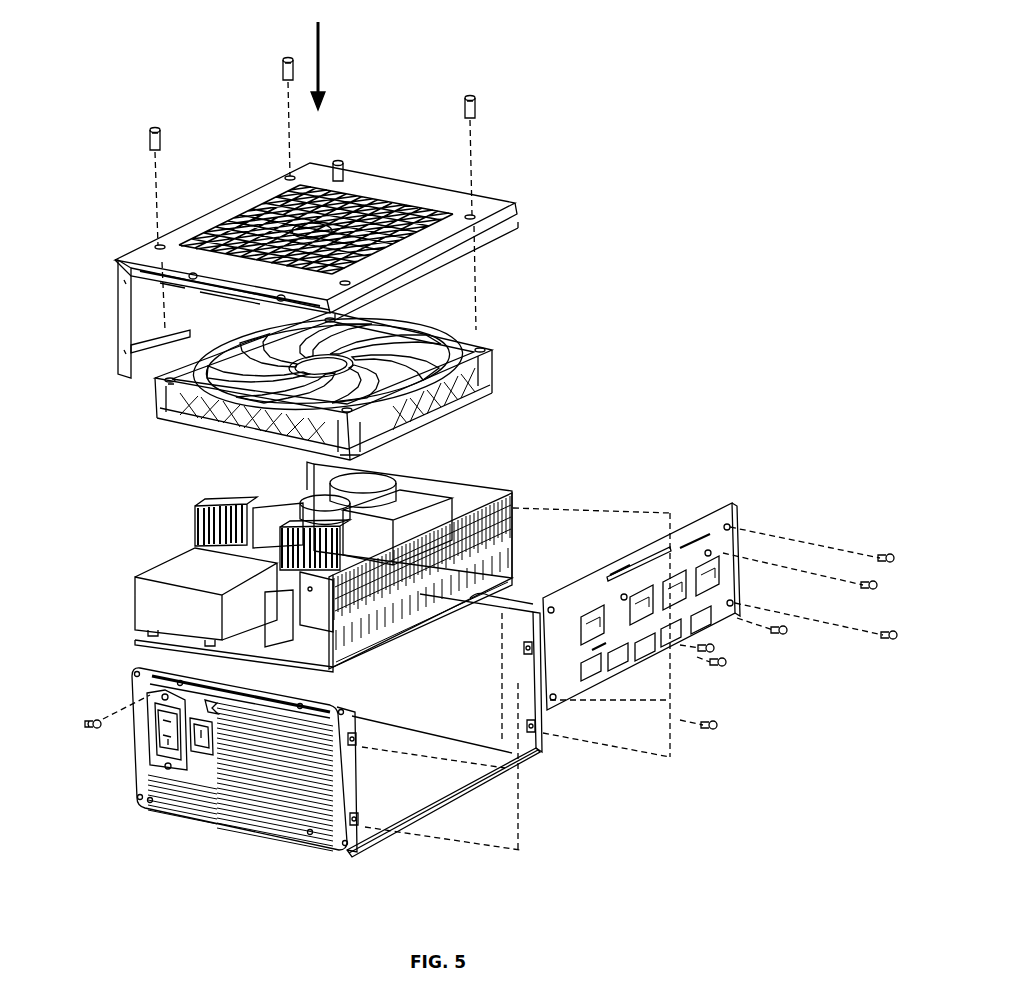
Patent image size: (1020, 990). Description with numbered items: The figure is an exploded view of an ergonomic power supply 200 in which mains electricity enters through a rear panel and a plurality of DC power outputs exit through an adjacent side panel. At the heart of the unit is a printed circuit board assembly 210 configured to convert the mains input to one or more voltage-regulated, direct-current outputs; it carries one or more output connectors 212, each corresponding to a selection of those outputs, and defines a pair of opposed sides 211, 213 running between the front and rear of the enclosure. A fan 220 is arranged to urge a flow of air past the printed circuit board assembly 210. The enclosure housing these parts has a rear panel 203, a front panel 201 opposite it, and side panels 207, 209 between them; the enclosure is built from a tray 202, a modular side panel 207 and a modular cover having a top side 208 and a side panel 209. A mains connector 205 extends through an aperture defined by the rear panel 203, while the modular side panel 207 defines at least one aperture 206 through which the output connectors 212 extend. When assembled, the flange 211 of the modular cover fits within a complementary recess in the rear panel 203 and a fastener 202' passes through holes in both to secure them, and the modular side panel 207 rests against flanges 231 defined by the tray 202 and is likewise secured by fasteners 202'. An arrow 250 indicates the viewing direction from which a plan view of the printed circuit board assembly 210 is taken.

The power supply 200 is at (702, 214).
The front panel 201 is at (455, 719).
The tray 202 is at (343, 685).
The fastener 202' is at (484, 404).
The rear panel 203 is at (163, 808).
The mains connector 205 is at (147, 741).
The aperture 206 is at (634, 660).
The modular side panel 207 is at (722, 512).
The top side 208 is at (352, 180).
The side panel 209 is at (113, 318).
The printed circuit board assembly 210 is at (105, 622).
The flange 211 is at (240, 294).
The output connectors 212 is at (520, 530).
The side 213 is at (390, 650).
The fan 220 is at (140, 422).
The flanges 231 is at (525, 645).
The arrow 250 is at (320, 70).